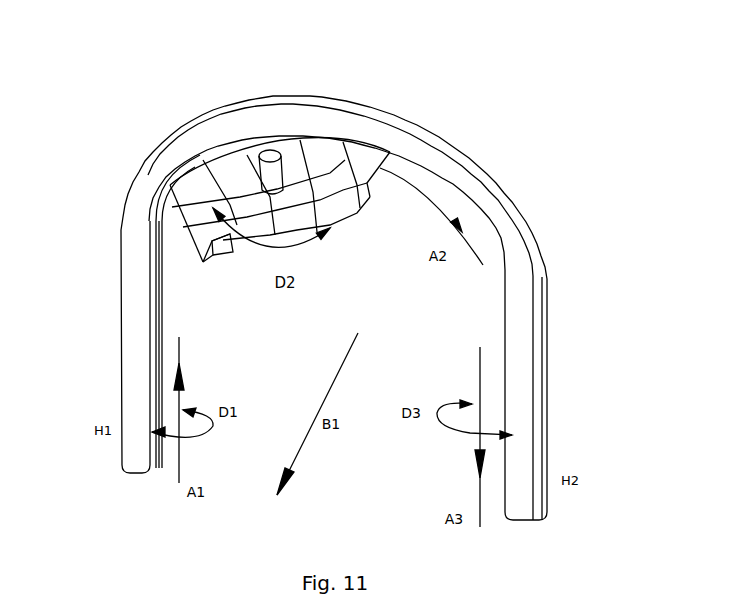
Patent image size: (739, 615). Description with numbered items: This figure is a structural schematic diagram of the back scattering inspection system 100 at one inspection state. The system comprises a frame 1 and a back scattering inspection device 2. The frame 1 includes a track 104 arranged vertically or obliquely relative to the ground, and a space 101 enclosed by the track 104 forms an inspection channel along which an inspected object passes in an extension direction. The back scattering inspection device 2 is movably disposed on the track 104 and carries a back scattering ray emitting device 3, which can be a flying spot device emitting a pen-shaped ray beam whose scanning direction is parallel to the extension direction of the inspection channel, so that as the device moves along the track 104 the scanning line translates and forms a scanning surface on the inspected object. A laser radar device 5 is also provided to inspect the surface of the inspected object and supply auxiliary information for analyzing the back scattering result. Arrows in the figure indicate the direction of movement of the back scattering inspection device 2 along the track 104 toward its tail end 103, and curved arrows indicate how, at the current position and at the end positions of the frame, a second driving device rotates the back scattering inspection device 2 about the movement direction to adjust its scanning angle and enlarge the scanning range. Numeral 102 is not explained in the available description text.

The back scattering inspection system 100 is at (212, 48).
The frame 1 is at (140, 190).
The back scattering inspection device 2 is at (348, 160).
The back scattering ray emitting device 3 is at (277, 162).
The laser radar device 5 is at (220, 237).
The space 101 is at (427, 337).
The left leg outer wall 102 is at (193, 320).
The tail end 103 is at (522, 370).
The track 104 is at (158, 292).